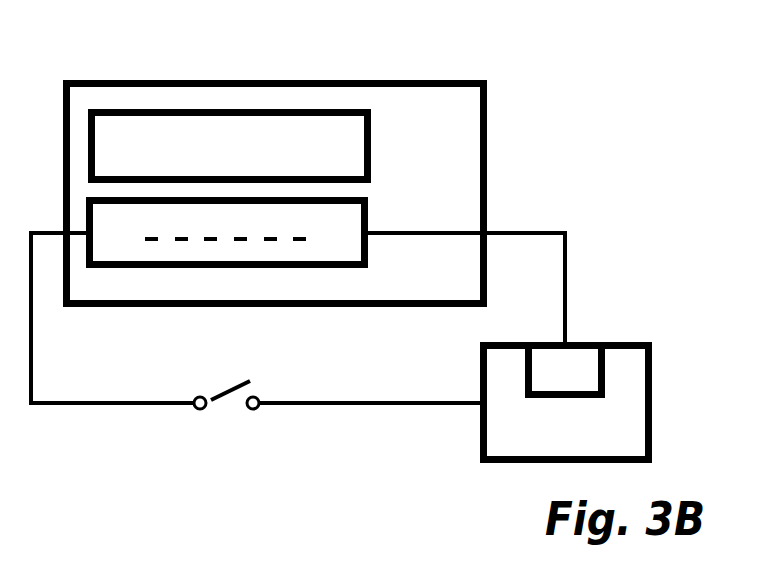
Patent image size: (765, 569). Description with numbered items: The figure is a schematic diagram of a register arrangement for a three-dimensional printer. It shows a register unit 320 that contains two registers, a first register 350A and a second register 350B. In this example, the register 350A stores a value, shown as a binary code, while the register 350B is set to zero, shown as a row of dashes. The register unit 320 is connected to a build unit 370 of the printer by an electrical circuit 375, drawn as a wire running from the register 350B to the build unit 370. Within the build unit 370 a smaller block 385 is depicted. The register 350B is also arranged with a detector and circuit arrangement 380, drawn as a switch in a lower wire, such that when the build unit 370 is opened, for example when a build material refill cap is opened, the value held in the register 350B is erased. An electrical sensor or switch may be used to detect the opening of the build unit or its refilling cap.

The register unit 320 is at (240, 78).
The register 350A is at (371, 142).
The register 350B is at (370, 210).
The electrical circuit 375 is at (568, 253).
The build unit 370 is at (652, 343).
The register/memory in control unit 385 is at (565, 370).
The detector and circuit arrangement 380 is at (228, 418).